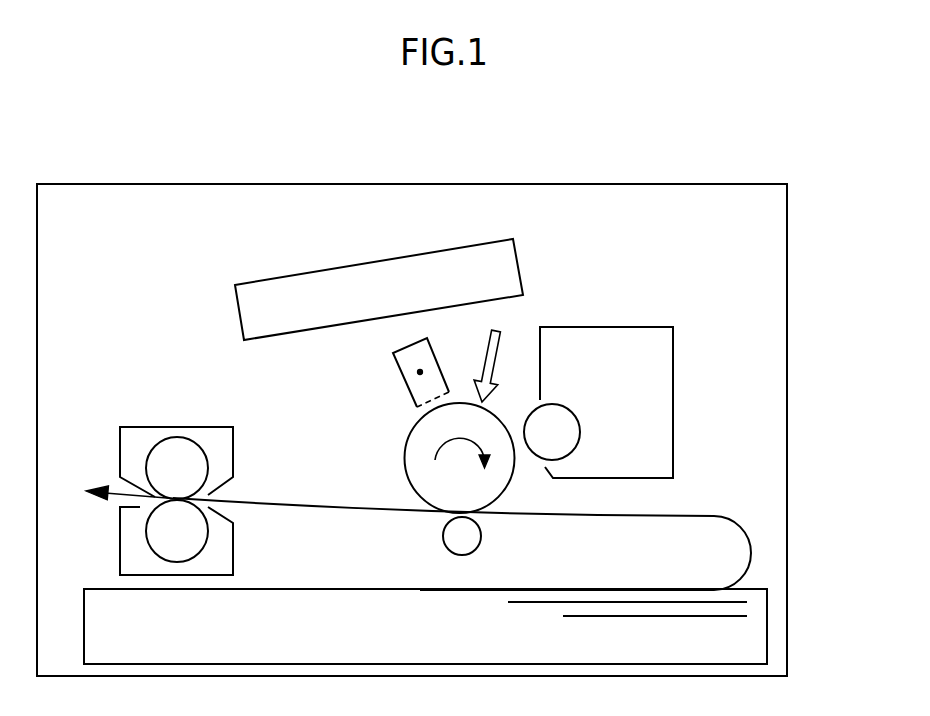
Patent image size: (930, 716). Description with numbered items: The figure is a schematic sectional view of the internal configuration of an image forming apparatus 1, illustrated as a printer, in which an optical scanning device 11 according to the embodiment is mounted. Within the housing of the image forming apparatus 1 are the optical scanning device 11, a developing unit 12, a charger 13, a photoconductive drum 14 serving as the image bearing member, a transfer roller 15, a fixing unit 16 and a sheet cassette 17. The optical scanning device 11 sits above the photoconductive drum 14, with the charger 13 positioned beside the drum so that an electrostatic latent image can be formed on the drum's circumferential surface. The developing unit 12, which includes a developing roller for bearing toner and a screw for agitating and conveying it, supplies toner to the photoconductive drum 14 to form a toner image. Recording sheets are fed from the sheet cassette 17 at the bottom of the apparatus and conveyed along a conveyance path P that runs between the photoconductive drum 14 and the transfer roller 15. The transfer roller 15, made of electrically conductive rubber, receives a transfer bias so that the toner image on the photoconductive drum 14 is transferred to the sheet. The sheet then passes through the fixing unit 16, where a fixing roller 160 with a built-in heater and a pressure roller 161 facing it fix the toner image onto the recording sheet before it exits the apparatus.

The image forming apparatus 1 is at (550, 184).
The optical scanning device 11 is at (330, 267).
The developing unit 12 is at (592, 327).
The charger 13 is at (407, 390).
The photoconductive drum 14 is at (407, 486).
The transfer roller 15 is at (482, 535).
The fixing unit 16 is at (167, 427).
The fixing roller 160 is at (147, 462).
The pressure roller 161 is at (147, 540).
The sheet cassette 17 is at (767, 629).
The conveyance path P is at (702, 515).